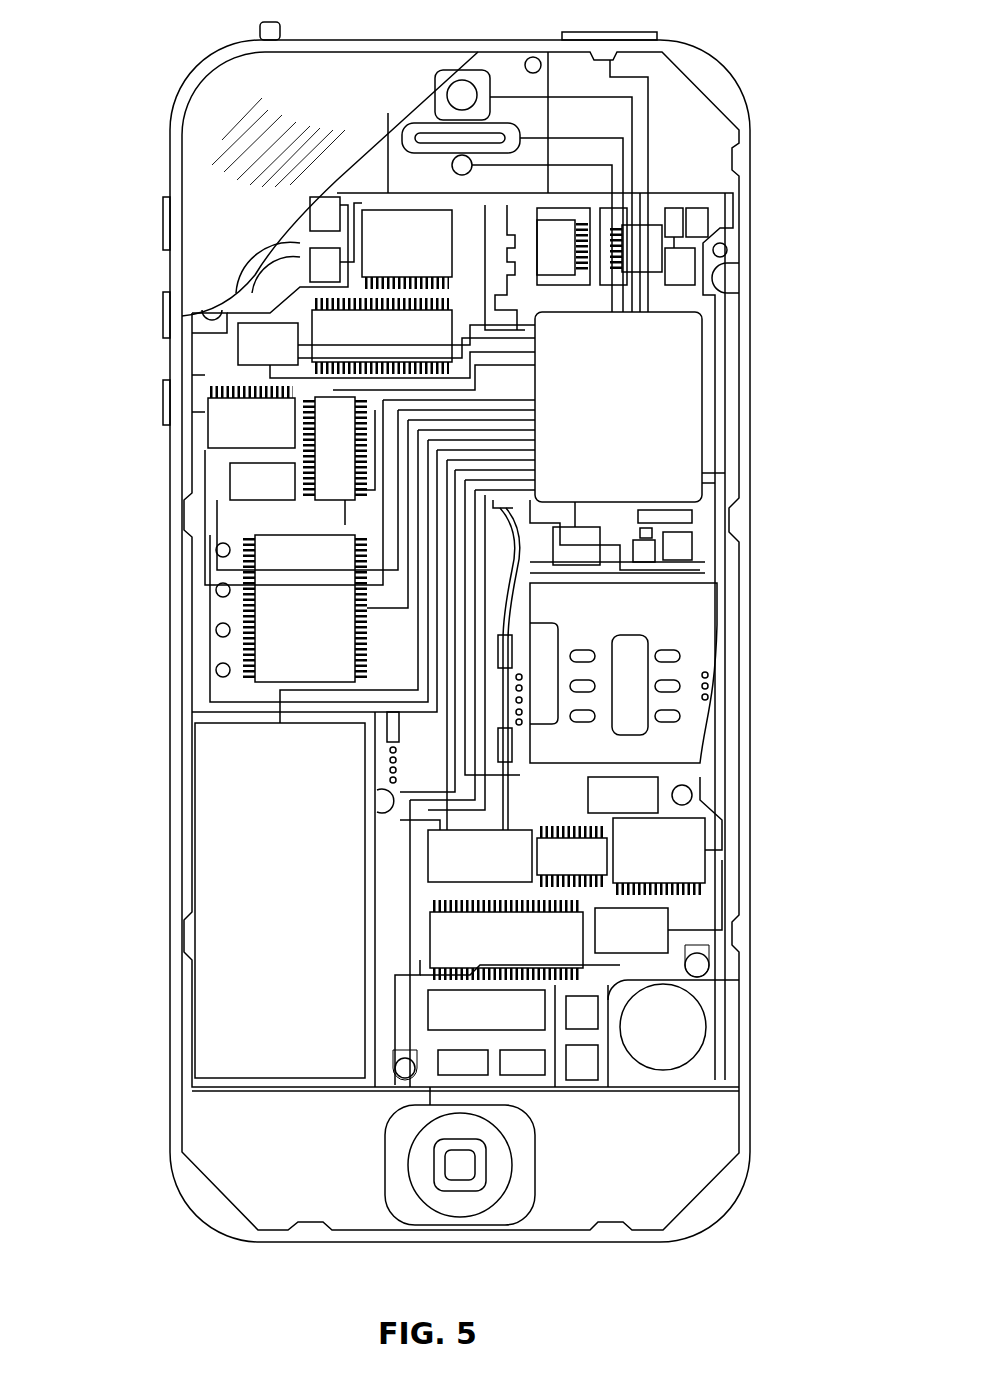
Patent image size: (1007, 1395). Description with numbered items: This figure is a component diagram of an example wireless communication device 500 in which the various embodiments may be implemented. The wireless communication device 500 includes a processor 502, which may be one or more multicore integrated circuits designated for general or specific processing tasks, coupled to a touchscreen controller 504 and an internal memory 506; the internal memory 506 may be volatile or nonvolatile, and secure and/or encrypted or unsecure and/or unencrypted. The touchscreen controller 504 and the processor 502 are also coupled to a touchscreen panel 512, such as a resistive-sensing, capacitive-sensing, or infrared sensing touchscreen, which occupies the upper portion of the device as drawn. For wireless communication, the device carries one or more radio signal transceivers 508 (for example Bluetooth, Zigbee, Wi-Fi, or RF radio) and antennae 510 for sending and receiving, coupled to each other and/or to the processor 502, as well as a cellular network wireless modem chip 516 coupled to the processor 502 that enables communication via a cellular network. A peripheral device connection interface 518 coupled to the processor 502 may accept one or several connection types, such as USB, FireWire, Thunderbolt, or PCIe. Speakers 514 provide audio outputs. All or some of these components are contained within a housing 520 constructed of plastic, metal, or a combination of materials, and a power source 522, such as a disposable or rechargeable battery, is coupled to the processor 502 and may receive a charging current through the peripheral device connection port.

The wireless communication device 500 is at (131, 80).
The processor 502 is at (618, 407).
The touchscreen controller 504 is at (407, 246).
The internal memory 506 is at (382, 336).
The radio signal transceiver 508 is at (653, 225).
The antenna 510 is at (697, 268).
The touchscreen panel 512 is at (195, 145).
The speaker 514 is at (420, 123).
The cellular network wireless modem chip 516 is at (506, 940).
The peripheral device connection interface 518 is at (486, 1010).
The housing 520 is at (751, 1097).
The power source 522 is at (280, 900).